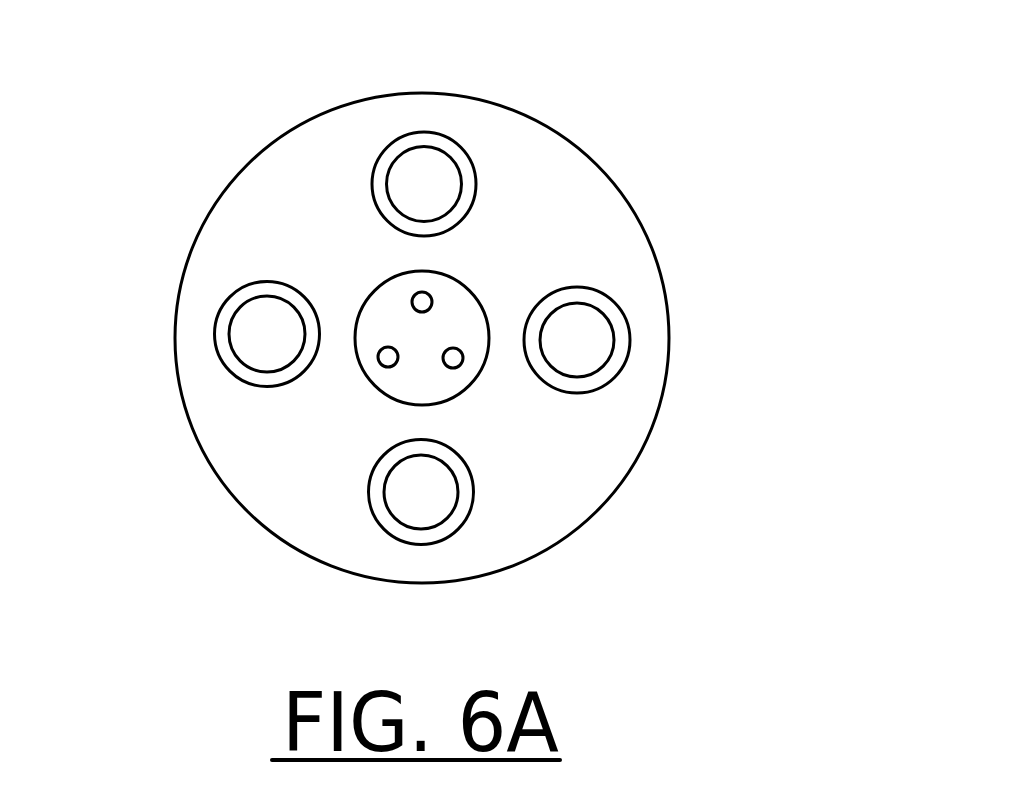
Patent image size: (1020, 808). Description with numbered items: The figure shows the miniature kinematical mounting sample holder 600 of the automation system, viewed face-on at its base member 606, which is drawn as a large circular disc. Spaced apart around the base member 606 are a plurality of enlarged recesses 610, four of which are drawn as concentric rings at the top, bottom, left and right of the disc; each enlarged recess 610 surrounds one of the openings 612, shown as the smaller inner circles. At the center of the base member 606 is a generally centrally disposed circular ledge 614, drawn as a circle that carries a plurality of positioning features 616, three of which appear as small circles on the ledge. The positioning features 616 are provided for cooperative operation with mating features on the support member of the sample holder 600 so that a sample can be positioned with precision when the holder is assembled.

The miniature kinematical mounting sample holder 600 is at (604, 46).
The base member 606 is at (366, 92).
The enlarged recesses 610 is at (377, 158).
The openings 612 is at (385, 503).
The circular ledge 614 is at (435, 272).
The positioning features 616 is at (400, 350).